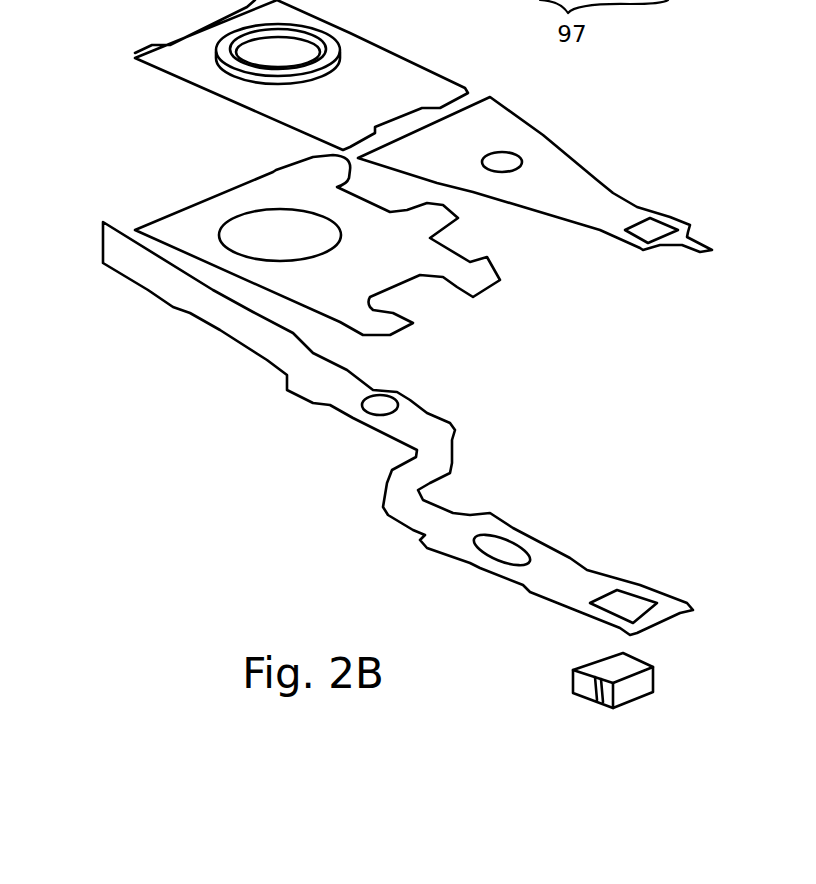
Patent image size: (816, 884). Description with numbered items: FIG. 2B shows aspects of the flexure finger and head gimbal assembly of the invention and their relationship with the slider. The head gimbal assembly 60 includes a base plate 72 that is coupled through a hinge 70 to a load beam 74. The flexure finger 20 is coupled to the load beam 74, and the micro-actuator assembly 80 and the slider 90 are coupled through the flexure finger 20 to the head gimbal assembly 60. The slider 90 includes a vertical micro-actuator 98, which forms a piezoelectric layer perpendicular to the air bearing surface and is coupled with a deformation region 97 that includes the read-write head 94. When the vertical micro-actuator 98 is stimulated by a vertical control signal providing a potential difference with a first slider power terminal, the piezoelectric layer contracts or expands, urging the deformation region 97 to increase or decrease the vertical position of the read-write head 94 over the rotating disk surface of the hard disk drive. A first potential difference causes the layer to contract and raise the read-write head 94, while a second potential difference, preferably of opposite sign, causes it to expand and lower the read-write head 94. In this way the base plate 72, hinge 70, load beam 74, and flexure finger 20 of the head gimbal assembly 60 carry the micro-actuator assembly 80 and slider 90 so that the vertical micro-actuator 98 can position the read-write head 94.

The flexure finger 20 is at (398, 428).
The head gimbal assembly 60 is at (96, 0).
The hinge 70 is at (473, 262).
The base plate 72 is at (458, 82).
The load beam 74 is at (618, 195).
The micro-actuator assembly 80 is at (607, 597).
The slider 90 is at (598, 694).
The read-write head 94 is at (640, 697).
The deformation region 97 is at (598, 705).
The vertical micro-actuator 98 is at (612, 662).